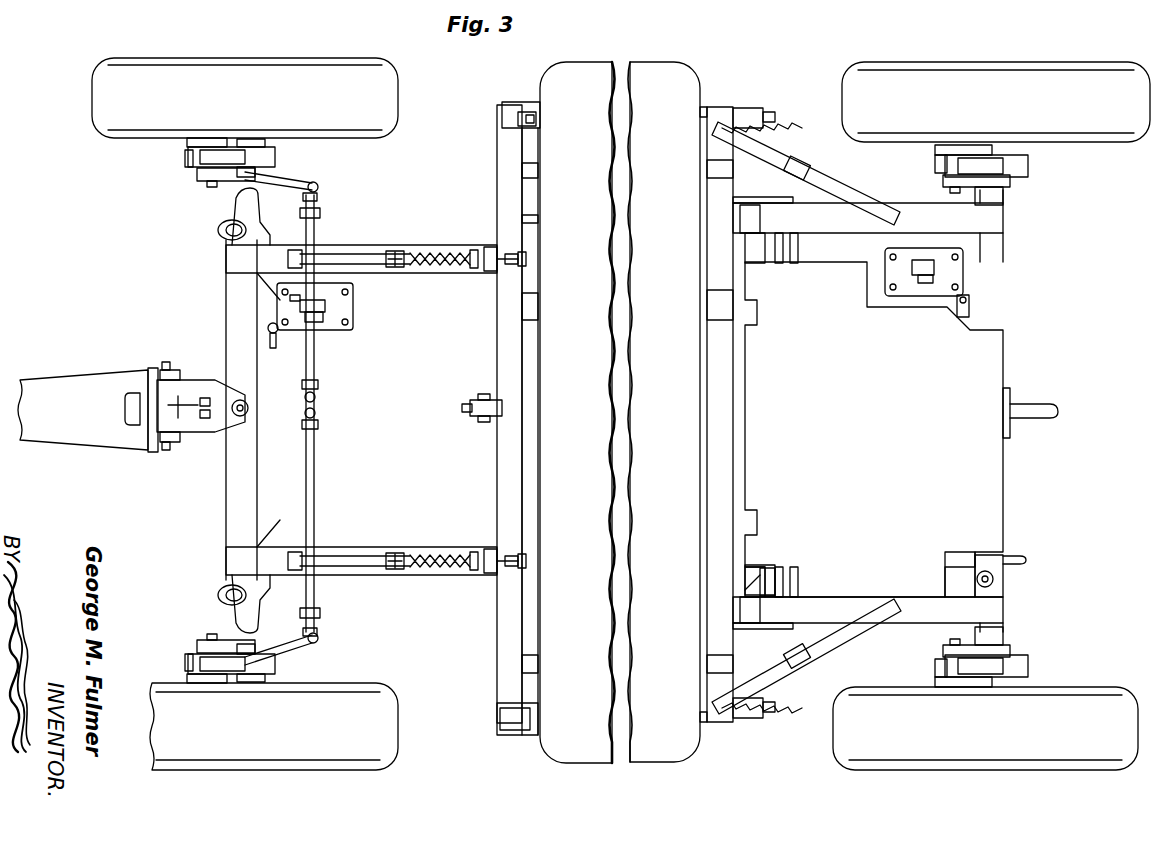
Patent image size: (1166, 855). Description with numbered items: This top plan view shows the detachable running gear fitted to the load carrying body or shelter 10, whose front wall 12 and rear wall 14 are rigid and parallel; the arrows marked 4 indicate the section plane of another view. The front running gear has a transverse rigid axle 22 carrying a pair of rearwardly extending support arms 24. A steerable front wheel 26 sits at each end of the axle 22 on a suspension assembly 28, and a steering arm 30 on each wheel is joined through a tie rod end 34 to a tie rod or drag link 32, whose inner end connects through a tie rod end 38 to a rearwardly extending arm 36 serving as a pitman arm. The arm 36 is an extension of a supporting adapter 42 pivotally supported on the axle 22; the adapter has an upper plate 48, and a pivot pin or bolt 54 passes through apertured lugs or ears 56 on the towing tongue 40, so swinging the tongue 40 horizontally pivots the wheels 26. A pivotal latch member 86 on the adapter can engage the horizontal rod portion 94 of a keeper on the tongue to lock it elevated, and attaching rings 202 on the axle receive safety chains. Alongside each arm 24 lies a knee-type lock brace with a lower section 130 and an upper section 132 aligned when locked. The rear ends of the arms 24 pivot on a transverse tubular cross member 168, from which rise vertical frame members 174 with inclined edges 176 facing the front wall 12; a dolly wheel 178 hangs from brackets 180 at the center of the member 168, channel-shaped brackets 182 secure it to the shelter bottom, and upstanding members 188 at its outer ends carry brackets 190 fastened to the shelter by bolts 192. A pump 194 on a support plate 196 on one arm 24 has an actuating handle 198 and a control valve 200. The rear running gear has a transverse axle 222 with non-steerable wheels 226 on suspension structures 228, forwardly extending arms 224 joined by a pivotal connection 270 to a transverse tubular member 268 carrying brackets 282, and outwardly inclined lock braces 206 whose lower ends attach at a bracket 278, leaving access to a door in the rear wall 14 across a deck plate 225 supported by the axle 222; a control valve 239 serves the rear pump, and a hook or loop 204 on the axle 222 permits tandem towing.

The section line 4- 4 is at (255, 262).
The load carrying body 10 is at (617, 428).
The front wall 12 is at (532, 727).
The rear wall 14 is at (692, 737).
The axle 22 is at (248, 520).
The support arms 24 is at (357, 258).
The steerable front wheel 26 is at (387, 107).
The suspension assembly 28 is at (265, 414).
The steering arm 30 is at (293, 181).
The tie rod or drag link 32 is at (310, 508).
The tie rod end 34 is at (318, 188).
The rearwardly extending arm 36 is at (277, 408).
The tie rod end 38 is at (316, 416).
The towing tongue 40 is at (35, 397).
The supporting adapter 42 is at (185, 382).
The upper plate 48 is at (195, 423).
The pivot pin or bolt 54 is at (163, 455).
The apertured lugs or ears 56 is at (160, 370).
The latch member 86 is at (192, 397).
The horizontal rod portion 94 is at (128, 405).
The lower section 130 is at (355, 556).
The upper section 132 is at (433, 556).
The transverse tubular cross member 168 is at (512, 652).
The vertical frame member 174 is at (497, 283).
The inclined edge portion 176 is at (520, 570).
The dolly wheel 178 is at (462, 412).
The brackets 180 is at (498, 398).
The bracket structures 182 is at (531, 338).
The upstanding member 188 is at (498, 722).
The bracket 190 is at (528, 112).
The fastening bolts 192 is at (535, 117).
The pump 194 is at (330, 306).
The support plate 196 is at (347, 292).
The actuating handle 198 is at (300, 305).
The control valve 200 is at (280, 330).
The eye 202 is at (217, 484).
The hook or loop 204 is at (1043, 418).
The lock brace assembly 206 is at (820, 175).
The transverse axle 222 is at (993, 270).
The forwardly extending arms 224 is at (917, 608).
The deck plate 225 is at (982, 368).
The supporting wheels 226 is at (1080, 117).
The suspension structure 228 is at (991, 432).
The control valve 239 is at (967, 313).
The transverse tubular member 268 is at (717, 420).
The pivotal connection 270 is at (740, 590).
The bracket 278 is at (795, 722).
The brackets 282 is at (662, 530).